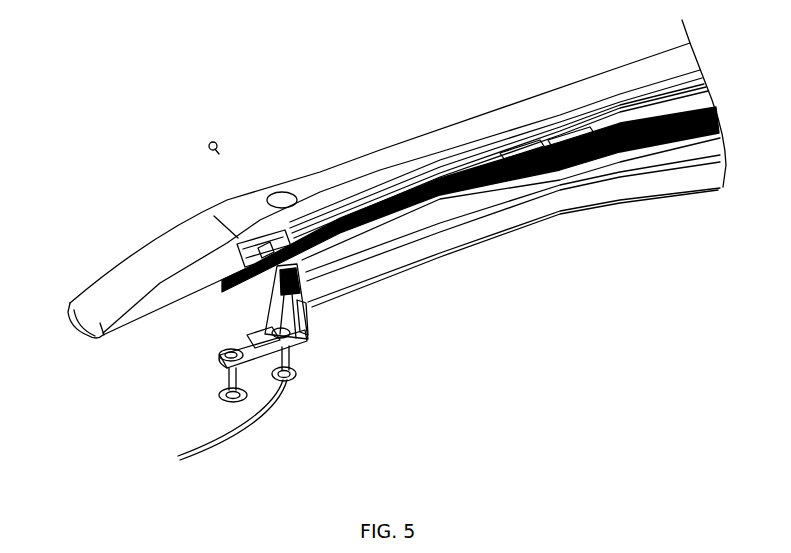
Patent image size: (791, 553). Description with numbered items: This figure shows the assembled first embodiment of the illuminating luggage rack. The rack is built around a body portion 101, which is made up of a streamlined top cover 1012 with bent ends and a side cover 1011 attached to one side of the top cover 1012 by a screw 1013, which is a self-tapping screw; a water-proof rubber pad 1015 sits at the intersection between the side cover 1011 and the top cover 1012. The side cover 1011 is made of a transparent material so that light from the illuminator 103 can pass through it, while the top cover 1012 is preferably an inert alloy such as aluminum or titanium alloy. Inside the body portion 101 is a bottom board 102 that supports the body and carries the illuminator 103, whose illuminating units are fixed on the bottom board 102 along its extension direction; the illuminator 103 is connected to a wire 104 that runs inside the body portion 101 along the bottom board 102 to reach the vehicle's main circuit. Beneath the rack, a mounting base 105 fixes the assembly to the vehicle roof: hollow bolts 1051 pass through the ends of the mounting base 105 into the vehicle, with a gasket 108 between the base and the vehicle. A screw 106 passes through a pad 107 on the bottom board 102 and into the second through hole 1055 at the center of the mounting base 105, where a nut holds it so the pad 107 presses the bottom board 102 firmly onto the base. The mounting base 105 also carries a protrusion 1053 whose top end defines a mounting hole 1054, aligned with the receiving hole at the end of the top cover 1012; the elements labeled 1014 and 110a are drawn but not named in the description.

The body portion 101 is at (526, 86).
The side cover 1011 is at (420, 265).
The top cover 1012 is at (442, 150).
The screw 1013 is at (212, 152).
The lower edge portion 1014 is at (363, 256).
The water-proof rubber pad 1015 is at (233, 262).
The bottom board 102 is at (455, 201).
The illuminator 103 is at (503, 182).
The wire 104 is at (267, 418).
The mounting base 105 is at (206, 373).
The hollow bolt 1051 is at (296, 373).
The protrusion 1053 is at (306, 312).
The mounting hole 1054 is at (268, 294).
The second through hole 1055 is at (243, 327).
The screw 106 is at (258, 237).
The pad 107 is at (285, 262).
The gasket 108 is at (292, 363).
The opening 110a is at (283, 193).